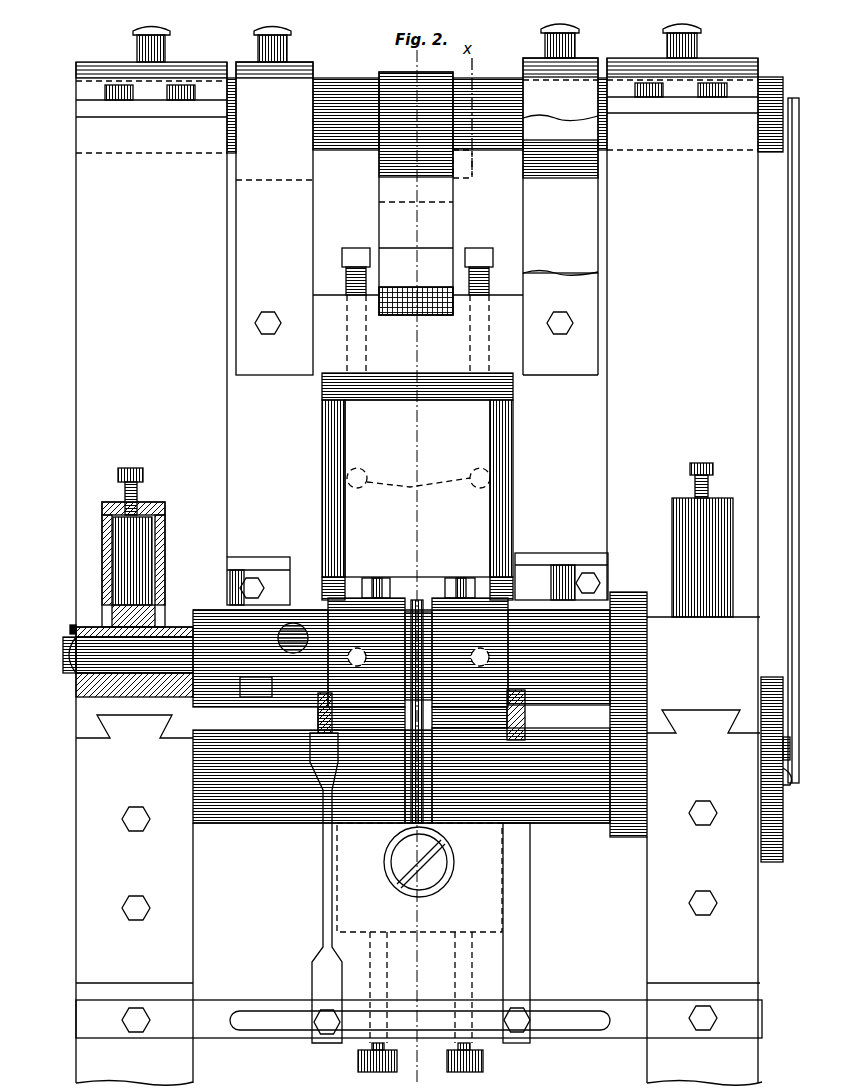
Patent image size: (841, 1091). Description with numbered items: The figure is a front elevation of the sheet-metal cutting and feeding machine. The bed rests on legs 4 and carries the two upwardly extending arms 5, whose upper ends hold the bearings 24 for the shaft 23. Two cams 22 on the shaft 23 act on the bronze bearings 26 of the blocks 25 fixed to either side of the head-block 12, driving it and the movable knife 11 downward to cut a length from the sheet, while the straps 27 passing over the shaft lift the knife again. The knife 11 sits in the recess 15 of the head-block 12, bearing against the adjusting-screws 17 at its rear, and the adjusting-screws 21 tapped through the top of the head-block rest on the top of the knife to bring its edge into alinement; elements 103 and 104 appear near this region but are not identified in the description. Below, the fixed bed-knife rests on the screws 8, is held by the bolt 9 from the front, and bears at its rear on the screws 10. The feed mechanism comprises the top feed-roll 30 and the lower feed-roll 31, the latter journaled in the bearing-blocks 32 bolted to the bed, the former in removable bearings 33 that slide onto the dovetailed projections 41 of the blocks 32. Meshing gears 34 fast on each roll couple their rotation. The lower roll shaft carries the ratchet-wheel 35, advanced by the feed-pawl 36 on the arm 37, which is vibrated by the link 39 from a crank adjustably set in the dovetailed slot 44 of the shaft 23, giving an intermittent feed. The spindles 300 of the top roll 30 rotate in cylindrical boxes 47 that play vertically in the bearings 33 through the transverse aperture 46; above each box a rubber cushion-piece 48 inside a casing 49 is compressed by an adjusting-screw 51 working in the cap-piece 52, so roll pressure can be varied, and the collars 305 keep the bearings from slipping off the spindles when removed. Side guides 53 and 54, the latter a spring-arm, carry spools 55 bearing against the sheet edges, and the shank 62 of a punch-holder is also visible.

The legs 4 is at (178, 1077).
The arms 5 is at (76, 330).
The screws 8 is at (447, 1072).
The bolt 9 is at (415, 872).
The screws 10 is at (238, 584).
The movable knife 11 is at (417, 488).
The head-block 12 is at (416, 320).
The recess 15 is at (322, 393).
The adjusting-screws 17 is at (418, 485).
The adjusting-screws 21 is at (345, 273).
The cams 22 is at (526, 150).
The shaft 23 is at (343, 78).
The bearings 24 is at (80, 62).
The blocks 25 is at (540, 205).
The bearing 26 is at (379, 180).
The straps 27 is at (417, 218).
The feed-roll 30 is at (385, 640).
The feed-roll 31 is at (367, 828).
The bearing-blocks 32 is at (100, 855).
The bearings 33 is at (85, 625).
The gears 34 is at (636, 594).
The ratchet-wheel 35 is at (772, 677).
The feed-pawl 36 is at (787, 778).
The arm 37 is at (790, 745).
The link 39 is at (799, 525).
The dovetailed projections 41 is at (110, 725).
The dovetailed slot 44 is at (785, 100).
The transverse aperture 46 is at (182, 620).
The boxes 47 is at (70, 629).
The elastic cushion-piece 48 is at (145, 555).
The casings 49 is at (102, 560).
The adjusting-screw 51 is at (140, 470).
The cap-piece 52 is at (160, 503).
The side guide 53 is at (525, 932).
The side guide 54 is at (325, 912).
The spools 55 is at (318, 715).
The screw-threaded shank 62 is at (378, 600).
The hidden part 103 is at (455, 160).
The hidden part 104 is at (388, 210).
The spindles 300 is at (80, 700).
The collars 305 is at (110, 660).